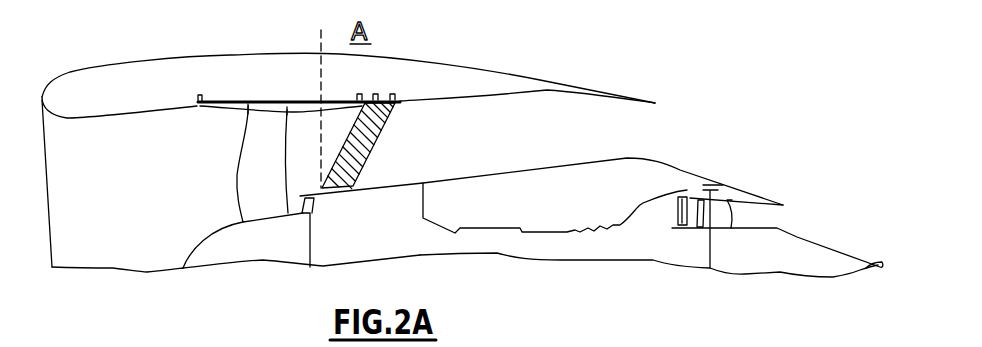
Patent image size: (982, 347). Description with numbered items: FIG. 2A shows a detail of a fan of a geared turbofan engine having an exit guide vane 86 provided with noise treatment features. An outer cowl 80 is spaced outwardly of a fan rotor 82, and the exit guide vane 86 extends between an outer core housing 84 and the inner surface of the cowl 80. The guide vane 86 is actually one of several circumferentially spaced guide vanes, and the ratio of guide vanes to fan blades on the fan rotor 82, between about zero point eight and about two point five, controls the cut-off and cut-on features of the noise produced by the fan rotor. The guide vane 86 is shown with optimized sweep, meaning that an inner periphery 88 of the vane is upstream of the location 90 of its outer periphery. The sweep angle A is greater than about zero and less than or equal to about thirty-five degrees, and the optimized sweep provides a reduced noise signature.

The outer cowl 80 is at (153, 80).
The fan rotor 82 is at (225, 243).
The outer core housing 84 is at (395, 183).
The exit guide vane 86 is at (360, 147).
The inner periphery 88 is at (322, 193).
The location of the outer periphery 90 is at (368, 104).